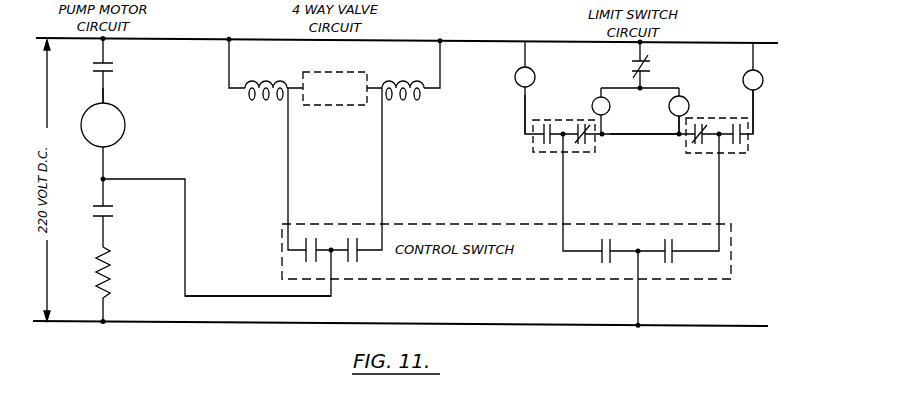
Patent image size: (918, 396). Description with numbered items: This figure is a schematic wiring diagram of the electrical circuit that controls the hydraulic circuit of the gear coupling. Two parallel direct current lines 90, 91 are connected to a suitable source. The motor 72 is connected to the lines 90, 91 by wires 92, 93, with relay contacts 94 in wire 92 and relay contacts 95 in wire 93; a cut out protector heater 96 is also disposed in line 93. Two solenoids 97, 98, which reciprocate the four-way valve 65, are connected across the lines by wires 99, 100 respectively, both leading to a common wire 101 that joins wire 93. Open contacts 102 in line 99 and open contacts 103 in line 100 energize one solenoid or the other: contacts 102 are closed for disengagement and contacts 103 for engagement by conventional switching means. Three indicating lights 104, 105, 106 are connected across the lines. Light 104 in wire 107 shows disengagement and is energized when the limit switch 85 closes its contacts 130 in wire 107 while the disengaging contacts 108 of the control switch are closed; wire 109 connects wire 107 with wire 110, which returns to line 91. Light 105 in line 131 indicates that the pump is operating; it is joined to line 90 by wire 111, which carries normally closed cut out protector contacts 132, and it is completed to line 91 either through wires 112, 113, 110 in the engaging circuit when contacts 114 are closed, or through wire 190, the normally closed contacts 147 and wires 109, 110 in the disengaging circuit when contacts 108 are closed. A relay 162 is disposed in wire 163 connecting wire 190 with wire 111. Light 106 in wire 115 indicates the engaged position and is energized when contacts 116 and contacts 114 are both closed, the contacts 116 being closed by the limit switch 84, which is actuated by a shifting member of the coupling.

The direct current line 90 is at (420, 42).
The direct current line 91 is at (263, 325).
The relay contacts 94 is at (98, 68).
The wire 92 is at (99, 90).
The motor 72 is at (120, 114).
The wire 93 is at (100, 186).
The relay contacts 95 is at (98, 213).
The cut out protector heater 96 is at (98, 276).
The solenoid 97 is at (268, 80).
The four-way valve 65 is at (337, 72).
The solenoid 98 is at (396, 80).
The wire 99 is at (288, 166).
The wire 100 is at (382, 170).
The common wire 101 is at (217, 296).
The open contacts 102 is at (312, 238).
The open contacts 103 is at (353, 238).
The indicating light 104 is at (515, 81).
The wire 107 is at (528, 107).
The limit switch 85 is at (534, 146).
The contacts 130 is at (548, 125).
The normally closed contacts 147 is at (580, 120).
The wire 111 is at (637, 52).
The cut out protector contacts 132 is at (633, 66).
The relay 162 is at (610, 104).
The wire 163 is at (603, 122).
The line 131 is at (682, 88).
The indicating light 105 is at (687, 101).
The limit switch 84 is at (750, 150).
The contacts 114 is at (697, 148).
The contacts 116 is at (743, 131).
The indicating light 106 is at (768, 72).
The wire 115 is at (754, 106).
The wire 190 is at (633, 137).
The wire 112 is at (677, 140).
The wire 113 is at (718, 190).
The wire 109 is at (564, 183).
The disengaging contacts 108 is at (605, 239).
The wire 110 is at (640, 296).